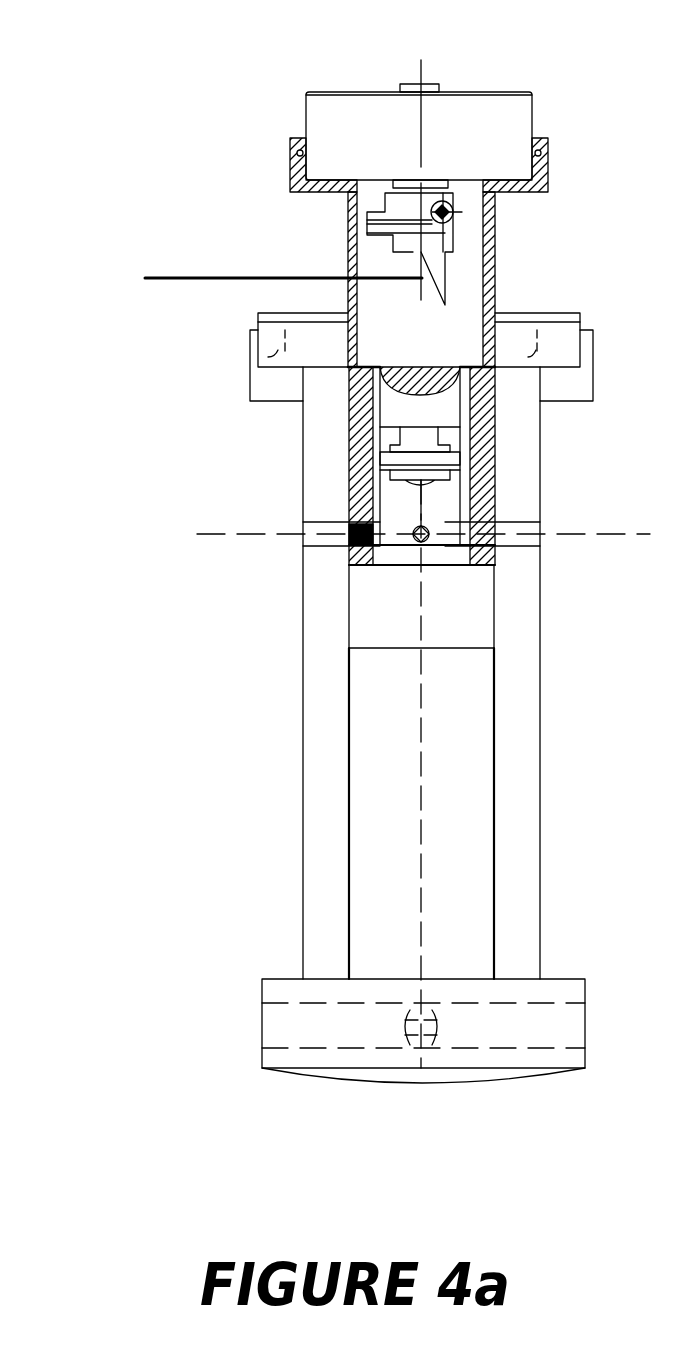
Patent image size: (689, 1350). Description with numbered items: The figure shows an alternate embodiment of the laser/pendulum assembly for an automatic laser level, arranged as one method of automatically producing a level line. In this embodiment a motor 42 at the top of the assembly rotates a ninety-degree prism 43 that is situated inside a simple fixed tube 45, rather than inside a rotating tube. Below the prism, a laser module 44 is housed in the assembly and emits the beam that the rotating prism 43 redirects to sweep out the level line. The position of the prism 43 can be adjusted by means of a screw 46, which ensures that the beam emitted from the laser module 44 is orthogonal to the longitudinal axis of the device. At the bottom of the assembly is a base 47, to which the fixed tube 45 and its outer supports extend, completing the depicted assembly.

The motor 42 is at (289, 96).
The 90° prism 43 is at (246, 233).
The laser module 44 is at (245, 434).
The fixed tube 45 is at (262, 466).
The screw 46 is at (201, 618).
The base 47 is at (307, 954).